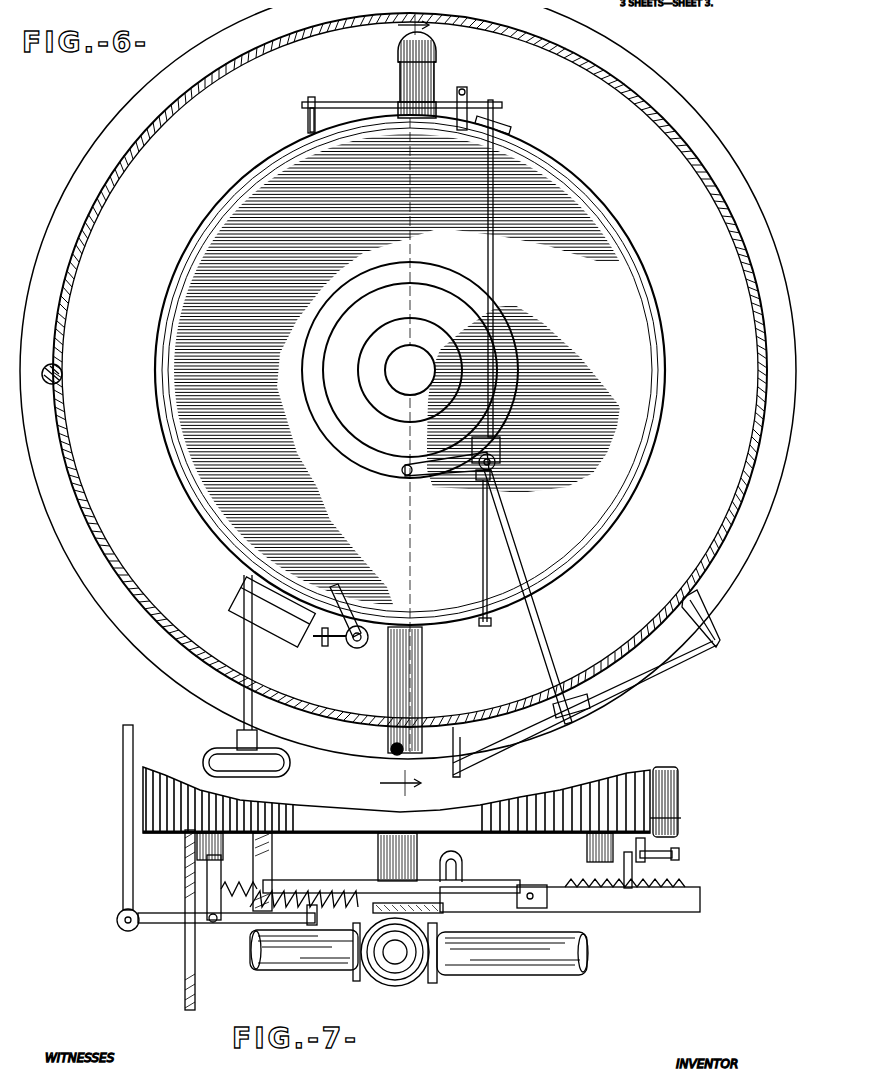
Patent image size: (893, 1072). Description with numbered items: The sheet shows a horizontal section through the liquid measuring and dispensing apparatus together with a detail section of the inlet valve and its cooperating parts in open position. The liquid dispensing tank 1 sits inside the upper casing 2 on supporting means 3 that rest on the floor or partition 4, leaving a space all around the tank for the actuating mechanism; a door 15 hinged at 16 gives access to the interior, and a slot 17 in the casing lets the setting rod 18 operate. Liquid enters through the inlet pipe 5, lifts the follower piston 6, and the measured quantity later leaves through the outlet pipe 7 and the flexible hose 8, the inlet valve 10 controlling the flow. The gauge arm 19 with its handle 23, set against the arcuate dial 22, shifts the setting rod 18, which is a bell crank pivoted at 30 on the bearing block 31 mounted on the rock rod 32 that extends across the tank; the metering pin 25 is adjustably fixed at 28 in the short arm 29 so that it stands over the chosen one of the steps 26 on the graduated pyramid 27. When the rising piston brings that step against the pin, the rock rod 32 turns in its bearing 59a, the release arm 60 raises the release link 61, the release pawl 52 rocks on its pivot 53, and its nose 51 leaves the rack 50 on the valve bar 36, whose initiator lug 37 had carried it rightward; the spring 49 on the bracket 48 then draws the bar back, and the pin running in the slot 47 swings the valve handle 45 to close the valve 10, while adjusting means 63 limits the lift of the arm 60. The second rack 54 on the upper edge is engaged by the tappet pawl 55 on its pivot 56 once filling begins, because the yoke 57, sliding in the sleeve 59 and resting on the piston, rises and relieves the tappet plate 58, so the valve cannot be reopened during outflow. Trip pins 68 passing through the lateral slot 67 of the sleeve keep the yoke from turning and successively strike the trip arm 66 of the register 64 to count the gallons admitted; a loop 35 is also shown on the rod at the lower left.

In FIG. 6, the liquid dispensing tank 1 is at (663, 320).
In FIG. 7, the liquid dispensing tank 1 is at (585, 790).
In FIG. 6, the upper casing 2 is at (760, 352).
In FIG. 7, the supporting means 3 is at (197, 840).
In FIG. 6, the floor or partition 4 is at (785, 553).
In FIG. 6, the inlet pipe 5 is at (398, 78).
In FIG. 7, the inlet pipe 5 is at (300, 965).
In FIG. 6, the follower piston 6 is at (628, 376).
In FIG. 6, the outlet pipe 7 is at (422, 675).
In FIG. 7, the outlet pipe 7 is at (530, 975).
In FIG. 6, the flexible hose 8 is at (414, 408).
In FIG. 7, the inlet valve 10 is at (400, 986).
In FIG. 6, the door 15 is at (68, 300).
In FIG. 6, the hinge 16 is at (62, 377).
In FIG. 6, the slot 17 is at (485, 720).
In FIG. 6, the setting rod 18 is at (548, 640).
In FIG. 6, the gauge arm 19 is at (600, 700).
In FIG. 6, the arcuate dial 22 is at (690, 652).
In FIG. 6, the handle 23 is at (572, 718).
In FIG. 6, the metering pin 25 is at (404, 475).
In FIG. 6, the steps 26 is at (345, 410).
In FIG. 6, the graduated pyramid 27 is at (368, 458).
In FIG. 6, the adjustable fixing 28 is at (418, 478).
In FIG. 6, the short arm 29 is at (452, 472).
In FIG. 6, the pivot 30 is at (497, 468).
In FIG. 6, the bearing block 31 is at (480, 482).
In FIG. 6, the rock rod 32 is at (493, 262).
In FIG. 6, the loop handle 35 is at (290, 765).
In FIG. 7, the valve bar 36 is at (700, 900).
In FIG. 7, the initiator lug 37 is at (562, 875).
In FIG. 7, the valve handle 45 is at (445, 915).
In FIG. 7, the slot 47 is at (462, 868).
In FIG. 7, the bracket 48 is at (458, 858).
In FIG. 7, the spring 49 is at (240, 884).
In FIG. 7, the rack 50 is at (345, 878).
In FIG. 7, the nose 51 is at (330, 905).
In FIG. 6, the release pawl 52 is at (310, 124).
In FIG. 7, the release pawl 52 is at (150, 926).
In FIG. 6, the pivot 53 is at (244, 645).
In FIG. 7, the pivot 53 is at (213, 924).
In FIG. 7, the second rack 54 is at (625, 874).
In FIG. 7, the tappet pawl 55 is at (632, 875).
In FIG. 7, the pivot 56 is at (660, 858).
In FIG. 6, the yoke 57 is at (340, 583).
In FIG. 7, the yoke 57 is at (648, 843).
In FIG. 7, the tappet plate 58 is at (679, 856).
In FIG. 6, the sleeve 59 is at (492, 624).
In FIG. 7, the sleeve 59 is at (678, 795).
In FIG. 6, the bearing 59a is at (510, 128).
In FIG. 6, the release arm 60 is at (350, 92).
In FIG. 6, the release link 61 is at (302, 105).
In FIG. 7, the release link 61 is at (123, 845).
In FIG. 6, the adjusting means 63 is at (467, 92).
In FIG. 6, the register 64 is at (248, 600).
In FIG. 6, the trip arm 66 is at (320, 640).
In FIG. 6, the lateral slot 67 is at (352, 650).
In FIG. 6, the trip pins 68 is at (327, 648).